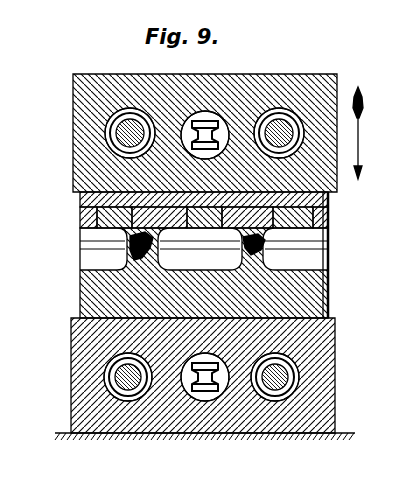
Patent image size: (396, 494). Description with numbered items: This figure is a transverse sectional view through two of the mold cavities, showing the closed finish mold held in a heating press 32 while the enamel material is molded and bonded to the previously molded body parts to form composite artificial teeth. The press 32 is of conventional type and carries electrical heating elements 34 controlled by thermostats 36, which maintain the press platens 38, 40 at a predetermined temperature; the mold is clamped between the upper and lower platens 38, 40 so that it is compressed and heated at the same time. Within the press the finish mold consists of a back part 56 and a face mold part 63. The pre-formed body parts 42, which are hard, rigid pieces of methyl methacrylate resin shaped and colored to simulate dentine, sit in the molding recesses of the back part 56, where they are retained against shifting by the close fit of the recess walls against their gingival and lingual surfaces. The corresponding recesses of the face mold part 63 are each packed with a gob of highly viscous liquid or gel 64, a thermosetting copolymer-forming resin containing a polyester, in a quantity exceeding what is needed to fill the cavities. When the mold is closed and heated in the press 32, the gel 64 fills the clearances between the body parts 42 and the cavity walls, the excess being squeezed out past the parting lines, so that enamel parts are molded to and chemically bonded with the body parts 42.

The press 32 is at (181, 116).
The electrical heating elements 34 is at (112, 112).
The thermostats 36 is at (205, 121).
The press platen 38 is at (76, 134).
The press platen 40 is at (85, 390).
The body parts 42 is at (136, 258).
The back part 56 is at (324, 300).
The face mold part 63 is at (326, 218).
The gel 64 is at (328, 241).